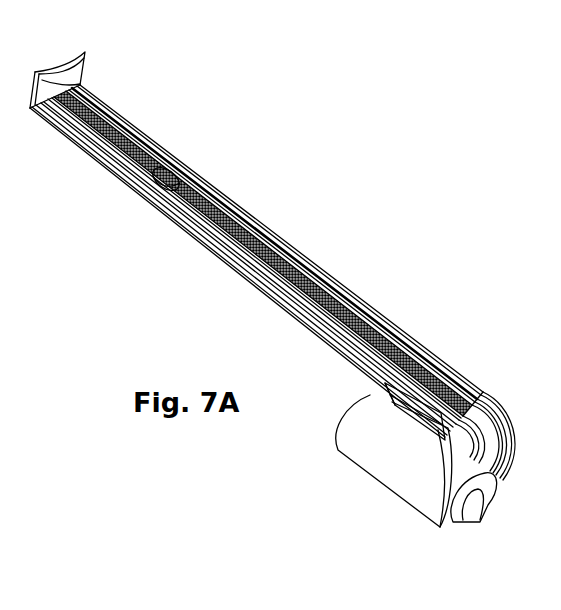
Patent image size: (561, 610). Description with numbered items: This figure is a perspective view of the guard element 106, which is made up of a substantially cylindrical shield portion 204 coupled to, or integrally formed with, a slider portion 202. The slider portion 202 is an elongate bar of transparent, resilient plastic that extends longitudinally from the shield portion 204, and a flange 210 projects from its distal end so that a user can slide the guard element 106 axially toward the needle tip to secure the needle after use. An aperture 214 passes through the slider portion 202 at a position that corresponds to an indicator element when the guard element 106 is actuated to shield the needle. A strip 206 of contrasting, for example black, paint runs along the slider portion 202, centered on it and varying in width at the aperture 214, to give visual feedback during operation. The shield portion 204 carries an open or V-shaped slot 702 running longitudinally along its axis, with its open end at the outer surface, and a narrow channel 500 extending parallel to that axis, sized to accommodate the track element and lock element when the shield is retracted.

The guard element 106 is at (352, 60).
The slider portion 202 is at (306, 231).
The shield portion 204 is at (383, 475).
The strip 206 is at (360, 325).
The flange 210 is at (75, 60).
The aperture 214 is at (178, 181).
The channel 500 is at (383, 398).
The slot 702 is at (470, 523).